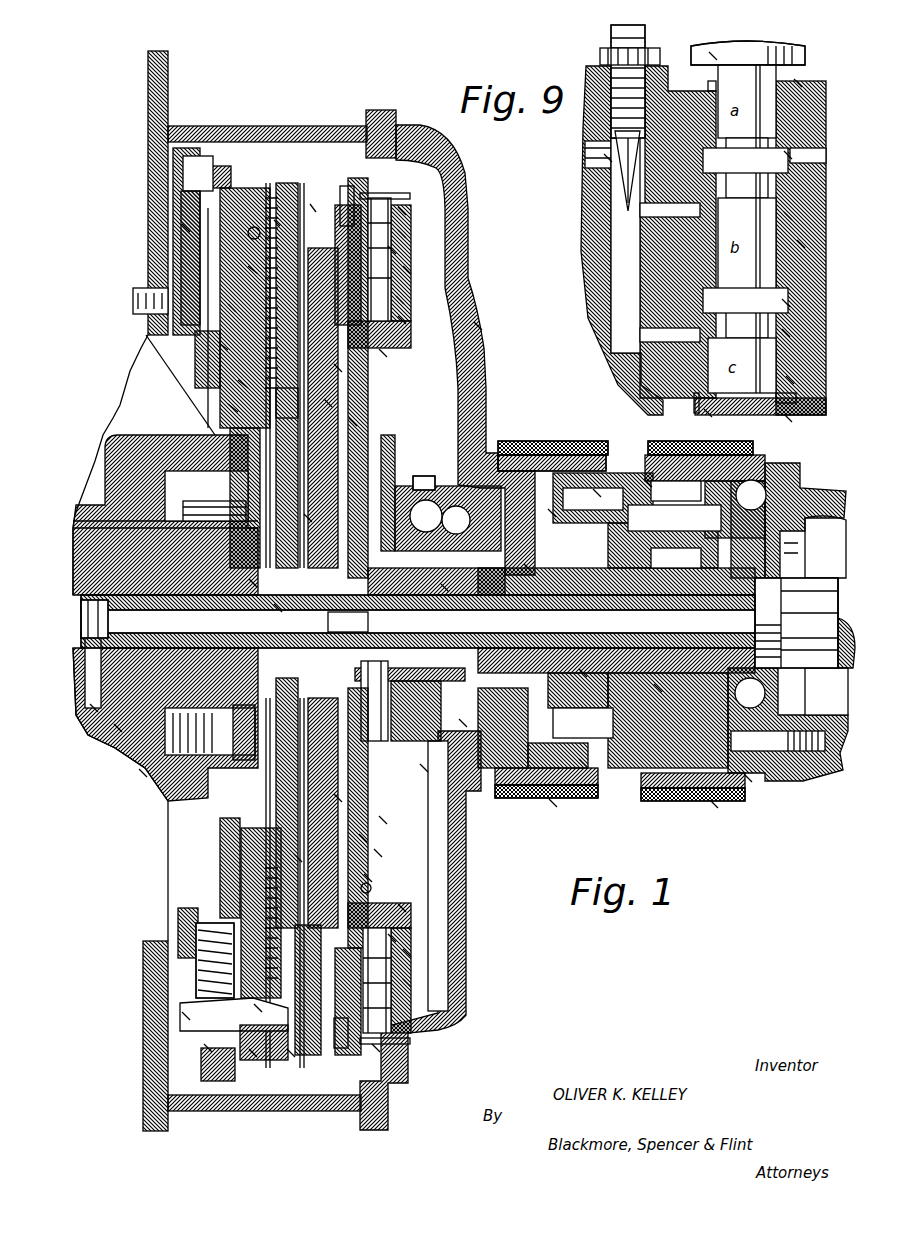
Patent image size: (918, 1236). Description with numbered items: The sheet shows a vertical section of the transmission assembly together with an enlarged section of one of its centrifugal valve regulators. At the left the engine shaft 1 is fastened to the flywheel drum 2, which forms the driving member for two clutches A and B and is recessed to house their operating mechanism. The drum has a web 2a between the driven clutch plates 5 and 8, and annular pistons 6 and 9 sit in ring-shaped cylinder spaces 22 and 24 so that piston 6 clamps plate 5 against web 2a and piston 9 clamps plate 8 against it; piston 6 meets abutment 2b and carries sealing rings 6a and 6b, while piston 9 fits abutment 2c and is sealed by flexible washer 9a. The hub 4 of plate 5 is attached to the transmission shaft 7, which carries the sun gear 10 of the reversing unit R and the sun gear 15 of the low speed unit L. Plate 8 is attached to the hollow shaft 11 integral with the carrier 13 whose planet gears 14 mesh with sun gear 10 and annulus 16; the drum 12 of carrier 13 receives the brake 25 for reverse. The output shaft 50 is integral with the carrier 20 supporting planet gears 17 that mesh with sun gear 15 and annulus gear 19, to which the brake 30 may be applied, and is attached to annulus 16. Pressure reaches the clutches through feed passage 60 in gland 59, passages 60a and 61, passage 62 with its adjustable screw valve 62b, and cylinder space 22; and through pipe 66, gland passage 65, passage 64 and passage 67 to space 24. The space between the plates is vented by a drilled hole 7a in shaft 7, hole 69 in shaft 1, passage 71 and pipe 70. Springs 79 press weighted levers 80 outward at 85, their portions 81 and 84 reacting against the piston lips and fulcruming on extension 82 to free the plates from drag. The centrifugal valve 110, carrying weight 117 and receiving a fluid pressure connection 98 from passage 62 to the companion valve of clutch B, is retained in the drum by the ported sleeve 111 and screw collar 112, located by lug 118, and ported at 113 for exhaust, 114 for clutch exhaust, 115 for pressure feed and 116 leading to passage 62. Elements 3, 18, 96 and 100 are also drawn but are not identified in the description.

In FIG. 1, the engine shaft 1 is at (110, 720).
In FIG. 1, the flywheel drum 2 is at (178, 220).
In FIG. 1, the web 2a is at (305, 200).
In FIG. 1, the abutment 2b is at (225, 400).
In FIG. 1, the drum abutment 2c is at (330, 790).
In FIG. 1, the clutch 3 is at (300, 510).
In FIG. 1, the hub 4 is at (245, 575).
In FIG. 1, the clutch plate 5 is at (287, 403).
In FIG. 1, the annular piston 6 is at (235, 376).
In FIG. 1, the sealing ring 6a is at (232, 428).
In FIG. 1, the sealing ring 6b is at (225, 300).
In FIG. 1, the transmission shaft 7 is at (470, 605).
In FIG. 1, the drilled hole 7a is at (270, 600).
In FIG. 1, the clutch plate 8 is at (330, 360).
In FIG. 1, the clutch piston 9 is at (320, 395).
In FIG. 1, the flexible washer 9a is at (345, 414).
In FIG. 1, the sun gear 10 is at (575, 665).
In FIG. 1, the hollow shaft 11 is at (520, 560).
In FIG. 1, the drum 12 is at (500, 450).
In FIG. 1, the carrier 13 is at (545, 505).
In FIG. 1, the planet gears 14 is at (590, 485).
In FIG. 1, the sun gear 15 is at (650, 680).
In FIG. 1, the annulus gear 16 is at (578, 792).
In FIG. 1, the planet gears 17 is at (640, 475).
In FIG. 1, the carrier 18 is at (740, 770).
In FIG. 1, the annulus gear 19 is at (670, 445).
In FIG. 9, the annulus gear 19 is at (700, 405).
In FIG. 1, the carrier 20 is at (575, 755).
In FIG. 1, the cylinder space 22 is at (215, 338).
In FIG. 1, the cylinder space 24 is at (355, 830).
In FIG. 1, the brake 25 is at (545, 433).
In FIG. 1, the brake 30 is at (650, 795).
In FIG. 1, the output shaft 50 is at (812, 590).
In FIG. 1, the gland 59 is at (455, 715).
In FIG. 1, the feed passage 60 is at (410, 470).
In FIG. 1, the passage 60a is at (437, 580).
In FIG. 1, the passage 61 is at (375, 345).
In FIG. 9, the passage 61 is at (780, 410).
In FIG. 1, the feed passage 62 is at (270, 215).
In FIG. 9, the feed passage 62 is at (600, 150).
In FIG. 1, the adjustable screw valve 62b is at (338, 190).
In FIG. 9, the adjustable screw valve 62b is at (600, 35).
In FIG. 1, the feed passage 64 is at (370, 878).
In FIG. 1, the gland passage 65 is at (348, 622).
In FIG. 1, the feed passage 66 is at (416, 760).
In FIG. 1, the passage 67 is at (375, 812).
In FIG. 1, the hole 69 is at (80, 595).
In FIG. 1, the pipe 70 is at (135, 765).
In FIG. 1, the passage 71 is at (86, 700).
In FIG. 1, the springs 79 is at (190, 935).
In FIG. 1, the weighted levers 80 is at (178, 1008).
In FIG. 1, the lever portion 81 is at (250, 1000).
In FIG. 1, the extension 82 is at (283, 1045).
In FIG. 1, the lever portion 84 is at (245, 1045).
In FIG. 1, the outward-pressed portion 85 is at (200, 1040).
In FIG. 1, the lever 96 is at (370, 845).
In FIG. 1, the fluid pressure connection 98 is at (198, 210).
In FIG. 9, the fluid pressure connection 98 is at (782, 372).
In FIG. 1, the housing 100 is at (470, 318).
In FIG. 1, the centrifugal valve 110 is at (400, 188).
In FIG. 9, the centrifugal valve 110 is at (800, 42).
In FIG. 1, the ported sleeve 111 is at (400, 262).
In FIG. 9, the ported sleeve 111 is at (793, 236).
In FIG. 1, the screw collar 112 is at (395, 203).
In FIG. 9, the screw collar 112 is at (790, 75).
In FIG. 1, the exhaust port 113 is at (395, 226).
In FIG. 9, the exhaust port 113 is at (780, 147).
In FIG. 1, the clutch exhaust port 114 is at (385, 242).
In FIG. 9, the clutch exhaust port 114 is at (780, 208).
In FIG. 1, the pressure feed port 115 is at (393, 292).
In FIG. 9, the pressure feed port 115 is at (778, 295).
In FIG. 1, the outlet port 116 is at (395, 312).
In FIG. 9, the outlet port 116 is at (778, 325).
In FIG. 1, the weight 117 is at (368, 1040).
In FIG. 9, the weight 117 is at (705, 48).
In FIG. 9, the locating lug 118 is at (685, 395).
In FIG. 1, the clutch A is at (245, 262).
In FIG. 1, the clutch B is at (290, 850).
In FIG. 1, the reversing unit R is at (545, 795).
In FIG. 1, the low speed unit L is at (706, 796).